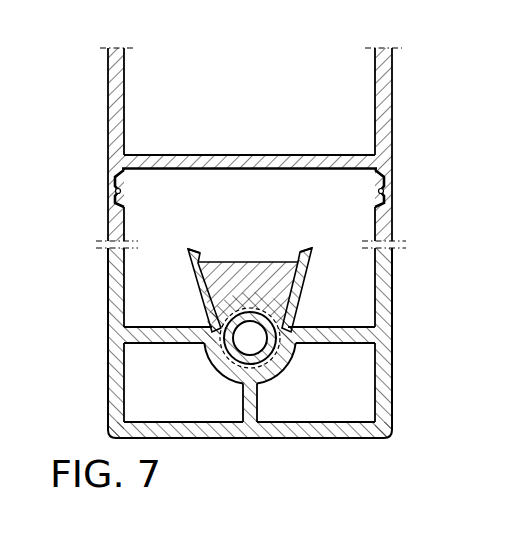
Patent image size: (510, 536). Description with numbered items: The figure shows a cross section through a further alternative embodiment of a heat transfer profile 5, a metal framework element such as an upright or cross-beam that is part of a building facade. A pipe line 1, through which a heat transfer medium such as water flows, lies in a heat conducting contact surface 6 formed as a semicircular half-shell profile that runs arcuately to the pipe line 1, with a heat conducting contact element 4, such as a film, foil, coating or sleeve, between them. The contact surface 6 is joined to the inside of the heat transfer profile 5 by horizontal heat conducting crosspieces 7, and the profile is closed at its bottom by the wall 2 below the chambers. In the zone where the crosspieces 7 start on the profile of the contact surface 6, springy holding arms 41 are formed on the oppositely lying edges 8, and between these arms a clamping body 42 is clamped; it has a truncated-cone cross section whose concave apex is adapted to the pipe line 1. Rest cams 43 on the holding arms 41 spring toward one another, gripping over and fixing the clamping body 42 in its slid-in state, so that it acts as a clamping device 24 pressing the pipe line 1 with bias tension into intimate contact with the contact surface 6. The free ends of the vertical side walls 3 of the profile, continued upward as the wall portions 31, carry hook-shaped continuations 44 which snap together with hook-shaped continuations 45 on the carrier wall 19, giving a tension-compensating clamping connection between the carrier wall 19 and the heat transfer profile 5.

The pipe line 1 is at (239, 381).
The bottom wall 2 is at (345, 439).
The vertical side walls 3 is at (108, 333).
The heat conducting contact element 4 is at (219, 375).
The heat transfer profile 5 is at (400, 408).
The heat conducting contact surface 6 is at (207, 359).
The heat conducting crosspieces 7 is at (141, 344).
The oppositely lying edges 8 is at (203, 336).
The carrier wall 19 is at (242, 157).
The clamping device 24 is at (324, 240).
The side walls 31 is at (387, 88).
The springy holding arms 41 is at (302, 290).
The clamping body 42 is at (247, 275).
The rest cams 43 is at (188, 249).
The hook-shaped continuations 44 is at (118, 191).
The hook-shaped continuations 45 is at (113, 190).